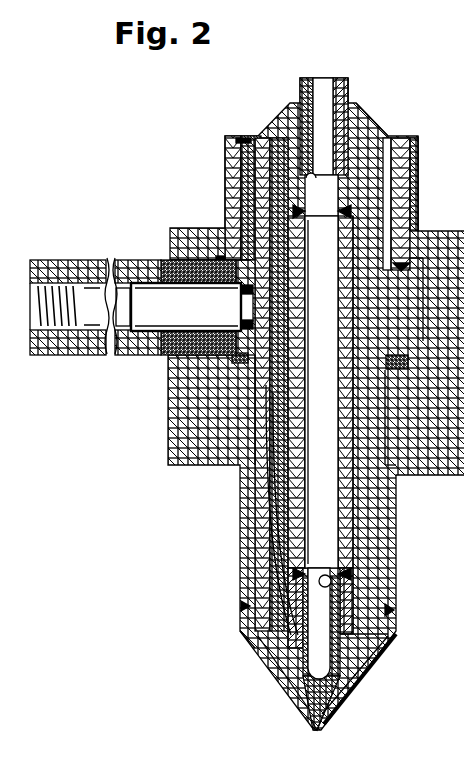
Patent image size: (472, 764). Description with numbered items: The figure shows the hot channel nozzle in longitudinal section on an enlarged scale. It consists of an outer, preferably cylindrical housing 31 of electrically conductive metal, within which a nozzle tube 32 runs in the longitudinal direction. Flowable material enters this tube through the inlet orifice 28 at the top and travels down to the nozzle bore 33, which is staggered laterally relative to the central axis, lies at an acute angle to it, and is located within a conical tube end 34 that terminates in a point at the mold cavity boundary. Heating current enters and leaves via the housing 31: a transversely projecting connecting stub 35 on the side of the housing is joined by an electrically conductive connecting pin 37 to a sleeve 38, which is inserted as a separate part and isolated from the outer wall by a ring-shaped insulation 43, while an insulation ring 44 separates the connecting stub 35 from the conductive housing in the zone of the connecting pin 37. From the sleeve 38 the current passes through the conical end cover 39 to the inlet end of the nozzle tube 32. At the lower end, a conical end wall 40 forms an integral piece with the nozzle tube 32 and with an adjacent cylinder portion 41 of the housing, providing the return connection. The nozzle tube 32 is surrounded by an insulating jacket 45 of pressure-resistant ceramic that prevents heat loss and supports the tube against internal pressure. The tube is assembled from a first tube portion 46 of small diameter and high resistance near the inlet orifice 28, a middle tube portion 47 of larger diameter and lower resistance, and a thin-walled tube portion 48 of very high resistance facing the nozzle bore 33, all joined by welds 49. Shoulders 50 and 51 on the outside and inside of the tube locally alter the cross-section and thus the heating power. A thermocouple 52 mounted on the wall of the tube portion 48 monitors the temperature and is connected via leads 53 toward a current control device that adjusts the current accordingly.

The inlet orifice 28 is at (319, 70).
The housing 31 is at (237, 148).
The nozzle tube 32 is at (238, 424).
The nozzle bore 33 is at (303, 700).
The conical tube end 34 is at (320, 706).
The connecting stub 35 is at (107, 255).
The connecting pin 37 is at (143, 310).
The sleeve 38 is at (240, 170).
The end cover 39 is at (363, 118).
The end wall 40 is at (268, 656).
The cylinder portion 41 is at (242, 513).
The insulation 43 is at (416, 136).
The insulation ring 44 is at (155, 258).
The insulating jacket 45 is at (357, 541).
The first tube portion 46 is at (341, 90).
The tube portion 47 is at (338, 502).
The tube portion 48 is at (327, 631).
The welds 49 is at (291, 204).
The shoulder 50 is at (348, 507).
The shoulder 51 is at (290, 164).
The thermocouple 52 is at (272, 629).
The leads 53 is at (262, 484).